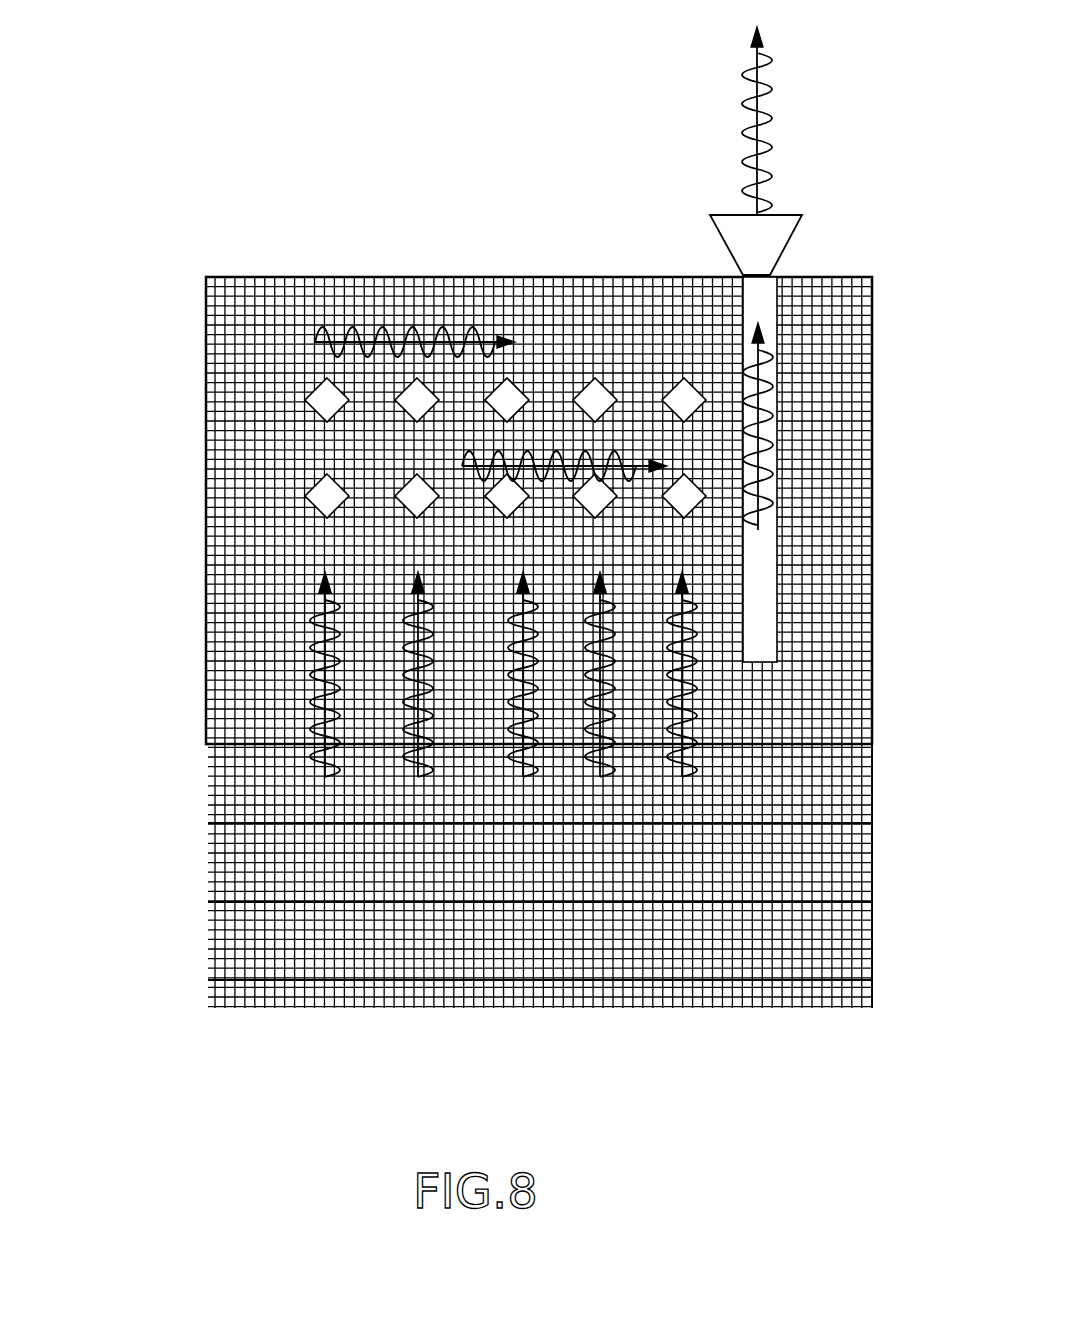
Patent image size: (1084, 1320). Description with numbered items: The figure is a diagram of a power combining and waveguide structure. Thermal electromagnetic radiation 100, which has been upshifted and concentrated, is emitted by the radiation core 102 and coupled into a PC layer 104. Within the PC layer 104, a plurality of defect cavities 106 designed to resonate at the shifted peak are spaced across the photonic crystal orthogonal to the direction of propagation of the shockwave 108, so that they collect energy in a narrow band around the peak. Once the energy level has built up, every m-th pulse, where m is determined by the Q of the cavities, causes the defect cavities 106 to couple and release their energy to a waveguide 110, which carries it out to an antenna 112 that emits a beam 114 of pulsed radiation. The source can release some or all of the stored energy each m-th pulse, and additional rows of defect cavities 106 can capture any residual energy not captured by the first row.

The thermal electromagnetic radiation 100 is at (420, 353).
The radiation core 102 is at (113, 780).
The PC layer 104 is at (248, 353).
The defect cavities 106 is at (328, 493).
The shockwave 108 is at (310, 576).
The waveguide 110 is at (777, 395).
The antenna 112 is at (722, 236).
The beam 114 is at (757, 106).